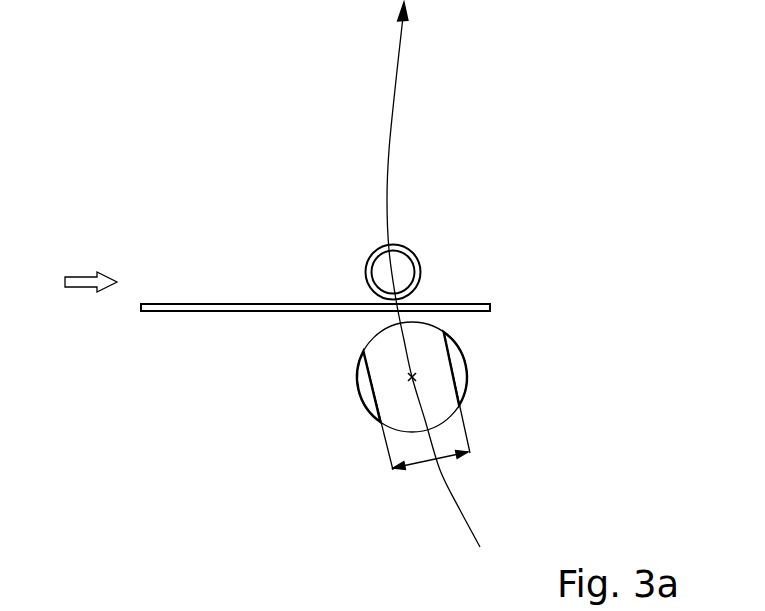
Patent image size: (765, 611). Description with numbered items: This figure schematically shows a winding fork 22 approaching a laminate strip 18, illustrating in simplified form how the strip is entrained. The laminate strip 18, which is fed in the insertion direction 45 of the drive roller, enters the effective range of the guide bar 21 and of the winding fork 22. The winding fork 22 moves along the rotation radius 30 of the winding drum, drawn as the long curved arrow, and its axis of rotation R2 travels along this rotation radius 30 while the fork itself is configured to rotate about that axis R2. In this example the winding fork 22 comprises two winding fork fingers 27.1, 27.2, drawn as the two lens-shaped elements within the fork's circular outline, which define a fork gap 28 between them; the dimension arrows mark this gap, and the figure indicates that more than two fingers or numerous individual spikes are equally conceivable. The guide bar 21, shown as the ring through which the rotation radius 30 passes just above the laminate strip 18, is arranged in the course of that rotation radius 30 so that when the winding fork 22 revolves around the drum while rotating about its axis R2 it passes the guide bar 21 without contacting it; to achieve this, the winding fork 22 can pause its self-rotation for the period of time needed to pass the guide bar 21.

The rotation radius of the winding drum 30 is at (385, 143).
The guide bar 21 is at (366, 273).
The laminate strip 18 is at (170, 296).
The insertion direction of the drive roller 45 is at (80, 282).
The winding fork 22 is at (495, 332).
The winding fork finger 27.1 is at (368, 385).
The winding fork finger 27.2 is at (447, 335).
The axis of rotation of the winding fork R2 is at (412, 377).
The fork gap 28 is at (433, 460).